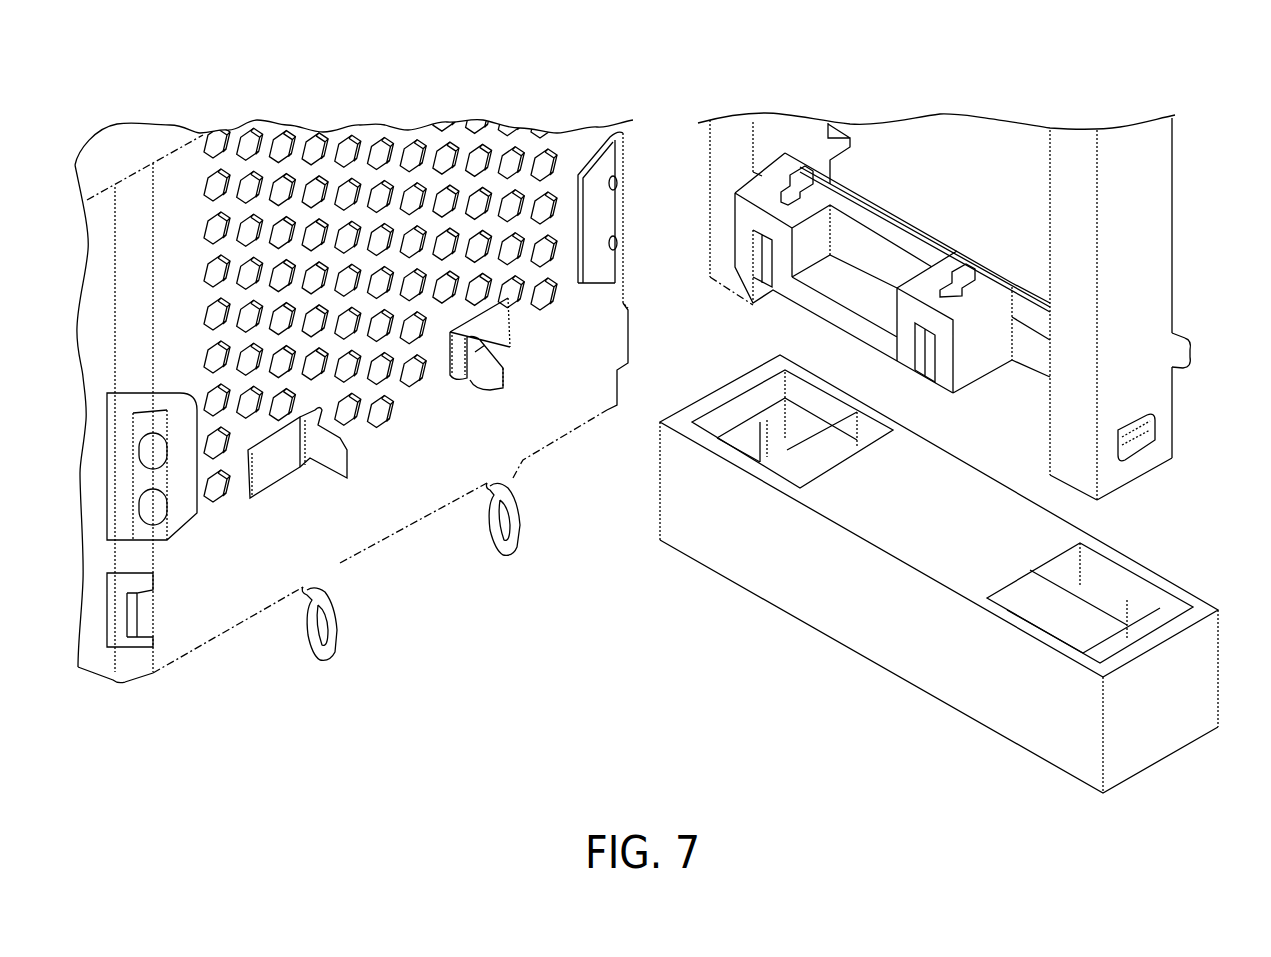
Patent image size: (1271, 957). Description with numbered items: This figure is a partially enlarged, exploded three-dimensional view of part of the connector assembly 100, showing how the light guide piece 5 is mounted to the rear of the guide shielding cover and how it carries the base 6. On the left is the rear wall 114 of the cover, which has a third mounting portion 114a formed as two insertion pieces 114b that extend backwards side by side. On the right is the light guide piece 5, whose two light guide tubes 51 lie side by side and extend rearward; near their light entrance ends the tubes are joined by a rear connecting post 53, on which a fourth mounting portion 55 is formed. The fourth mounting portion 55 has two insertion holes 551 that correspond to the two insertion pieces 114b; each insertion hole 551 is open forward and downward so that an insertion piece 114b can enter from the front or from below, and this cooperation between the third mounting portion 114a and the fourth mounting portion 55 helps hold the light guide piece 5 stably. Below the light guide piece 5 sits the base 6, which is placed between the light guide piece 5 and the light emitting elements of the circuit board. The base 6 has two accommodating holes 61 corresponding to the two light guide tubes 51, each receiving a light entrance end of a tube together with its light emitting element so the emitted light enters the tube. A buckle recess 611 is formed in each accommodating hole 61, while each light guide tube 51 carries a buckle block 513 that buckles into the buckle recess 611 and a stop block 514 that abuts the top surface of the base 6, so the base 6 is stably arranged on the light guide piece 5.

The connector assembly 100 is at (86, 81).
The rear wall 114 is at (572, 393).
The third mounting portion 114a is at (487, 556).
The insertion piece 114b is at (462, 382).
The light guide piece 5 is at (958, 306).
The light guide tube 51 is at (727, 150).
The buckle block 513 is at (1150, 433).
The stop block 514 is at (851, 148).
The rear connecting post 53 is at (975, 268).
The fourth mounting portion 55 is at (735, 212).
The insertion hole 551 is at (765, 253).
The base 6 is at (943, 561).
The accommodating hole 61 is at (716, 420).
The buckle recess 611 is at (748, 440).